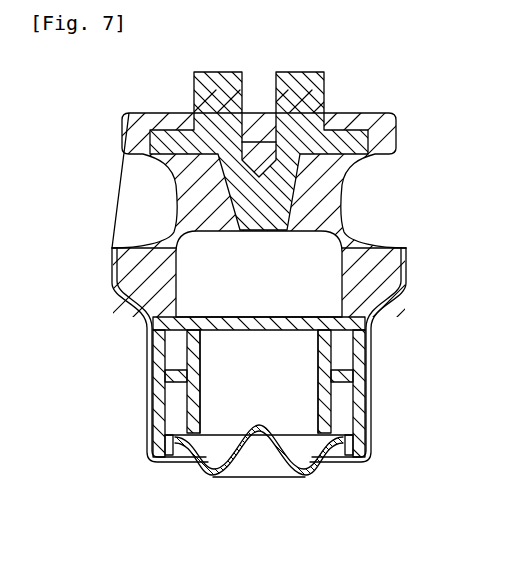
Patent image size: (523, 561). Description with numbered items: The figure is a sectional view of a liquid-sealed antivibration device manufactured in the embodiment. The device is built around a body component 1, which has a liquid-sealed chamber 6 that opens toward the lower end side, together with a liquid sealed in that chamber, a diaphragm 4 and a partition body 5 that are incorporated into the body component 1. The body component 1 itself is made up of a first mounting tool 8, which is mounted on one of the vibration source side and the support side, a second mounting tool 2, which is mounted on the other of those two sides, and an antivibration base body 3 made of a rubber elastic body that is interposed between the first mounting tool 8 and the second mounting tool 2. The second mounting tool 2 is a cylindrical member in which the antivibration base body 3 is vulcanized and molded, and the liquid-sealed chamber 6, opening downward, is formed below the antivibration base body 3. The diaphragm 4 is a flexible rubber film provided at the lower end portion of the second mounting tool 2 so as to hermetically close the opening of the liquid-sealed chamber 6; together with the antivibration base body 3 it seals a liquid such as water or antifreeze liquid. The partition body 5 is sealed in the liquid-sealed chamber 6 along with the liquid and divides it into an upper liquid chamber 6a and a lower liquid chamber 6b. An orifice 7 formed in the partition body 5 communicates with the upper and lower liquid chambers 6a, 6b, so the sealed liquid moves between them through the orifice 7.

The body component 1 is at (413, 252).
The second mounting tool 2 is at (397, 317).
The antivibration base body 3 is at (320, 200).
The diaphragm 4 is at (303, 477).
The partition body 5 is at (340, 348).
The liquid-sealed chamber 6 is at (189, 333).
The upper liquid chamber 6a is at (240, 275).
The lower liquid chamber 6b is at (258, 390).
The orifice 7 is at (340, 403).
The first mounting tool 8 is at (317, 83).